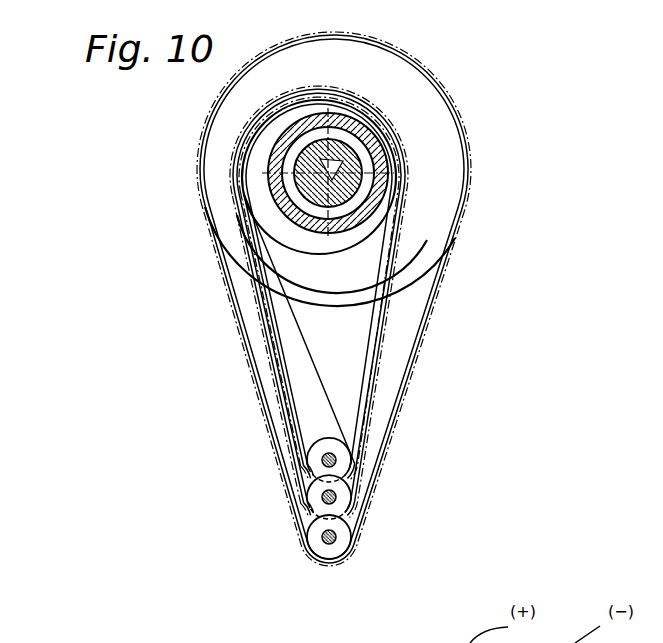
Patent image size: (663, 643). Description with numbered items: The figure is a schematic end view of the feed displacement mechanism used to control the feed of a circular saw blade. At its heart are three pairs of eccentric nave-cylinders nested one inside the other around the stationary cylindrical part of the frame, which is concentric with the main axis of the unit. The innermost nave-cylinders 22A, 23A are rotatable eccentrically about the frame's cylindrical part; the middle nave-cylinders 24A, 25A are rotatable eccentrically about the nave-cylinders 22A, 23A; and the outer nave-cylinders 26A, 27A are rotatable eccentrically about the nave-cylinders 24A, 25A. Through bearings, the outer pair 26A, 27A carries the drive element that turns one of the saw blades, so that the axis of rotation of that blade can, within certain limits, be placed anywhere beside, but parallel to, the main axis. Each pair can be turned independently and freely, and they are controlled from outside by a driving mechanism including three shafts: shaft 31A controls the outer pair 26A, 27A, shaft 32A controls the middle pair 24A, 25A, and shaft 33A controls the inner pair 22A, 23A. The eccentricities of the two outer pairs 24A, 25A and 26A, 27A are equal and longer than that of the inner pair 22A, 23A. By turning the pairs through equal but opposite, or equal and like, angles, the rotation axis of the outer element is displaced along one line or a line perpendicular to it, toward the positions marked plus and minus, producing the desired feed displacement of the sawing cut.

The eccentric nave-cylinder 22A is at (260, 200).
The eccentric nave-cylinder 23A is at (260, 200).
The eccentric nave-cylinder 24A is at (412, 140).
The eccentric nave-cylinder 25A is at (412, 140).
The eccentric nave-cylinder 26A is at (212, 152).
The eccentric nave-cylinder 27A is at (212, 152).
The shaft 31A is at (325, 545).
The shaft 32A is at (337, 500).
The shaft 33A is at (322, 462).